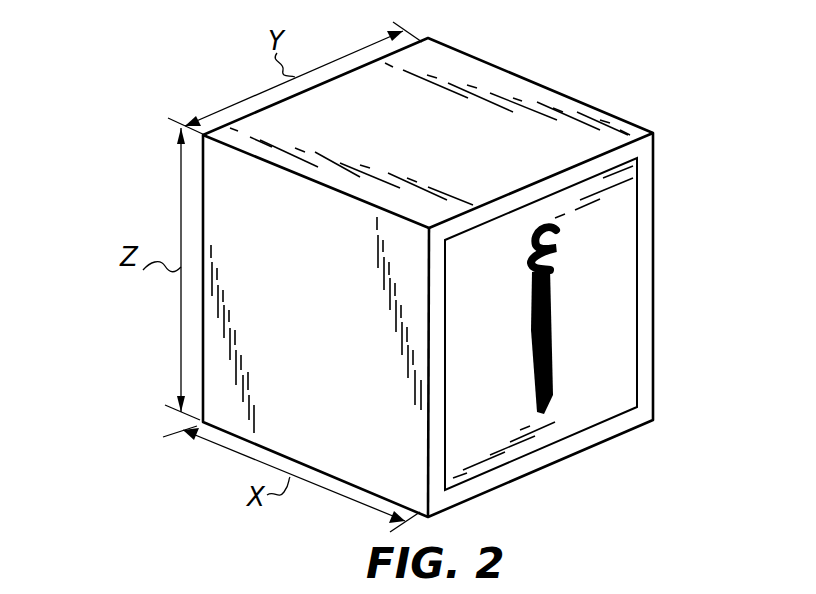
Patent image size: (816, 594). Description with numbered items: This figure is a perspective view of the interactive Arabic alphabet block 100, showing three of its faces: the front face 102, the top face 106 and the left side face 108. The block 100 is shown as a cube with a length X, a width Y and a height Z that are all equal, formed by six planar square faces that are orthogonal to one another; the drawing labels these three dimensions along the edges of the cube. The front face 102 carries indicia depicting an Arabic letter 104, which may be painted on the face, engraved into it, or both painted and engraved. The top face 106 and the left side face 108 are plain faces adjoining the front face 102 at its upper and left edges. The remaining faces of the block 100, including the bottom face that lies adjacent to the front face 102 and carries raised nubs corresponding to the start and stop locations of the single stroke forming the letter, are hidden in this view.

The interactive Arabic alphabet block 100 is at (106, 84).
The front face 102 is at (624, 377).
The Arabic letter 104 is at (550, 300).
The top face 106 is at (448, 131).
The left side face 108 is at (330, 314).